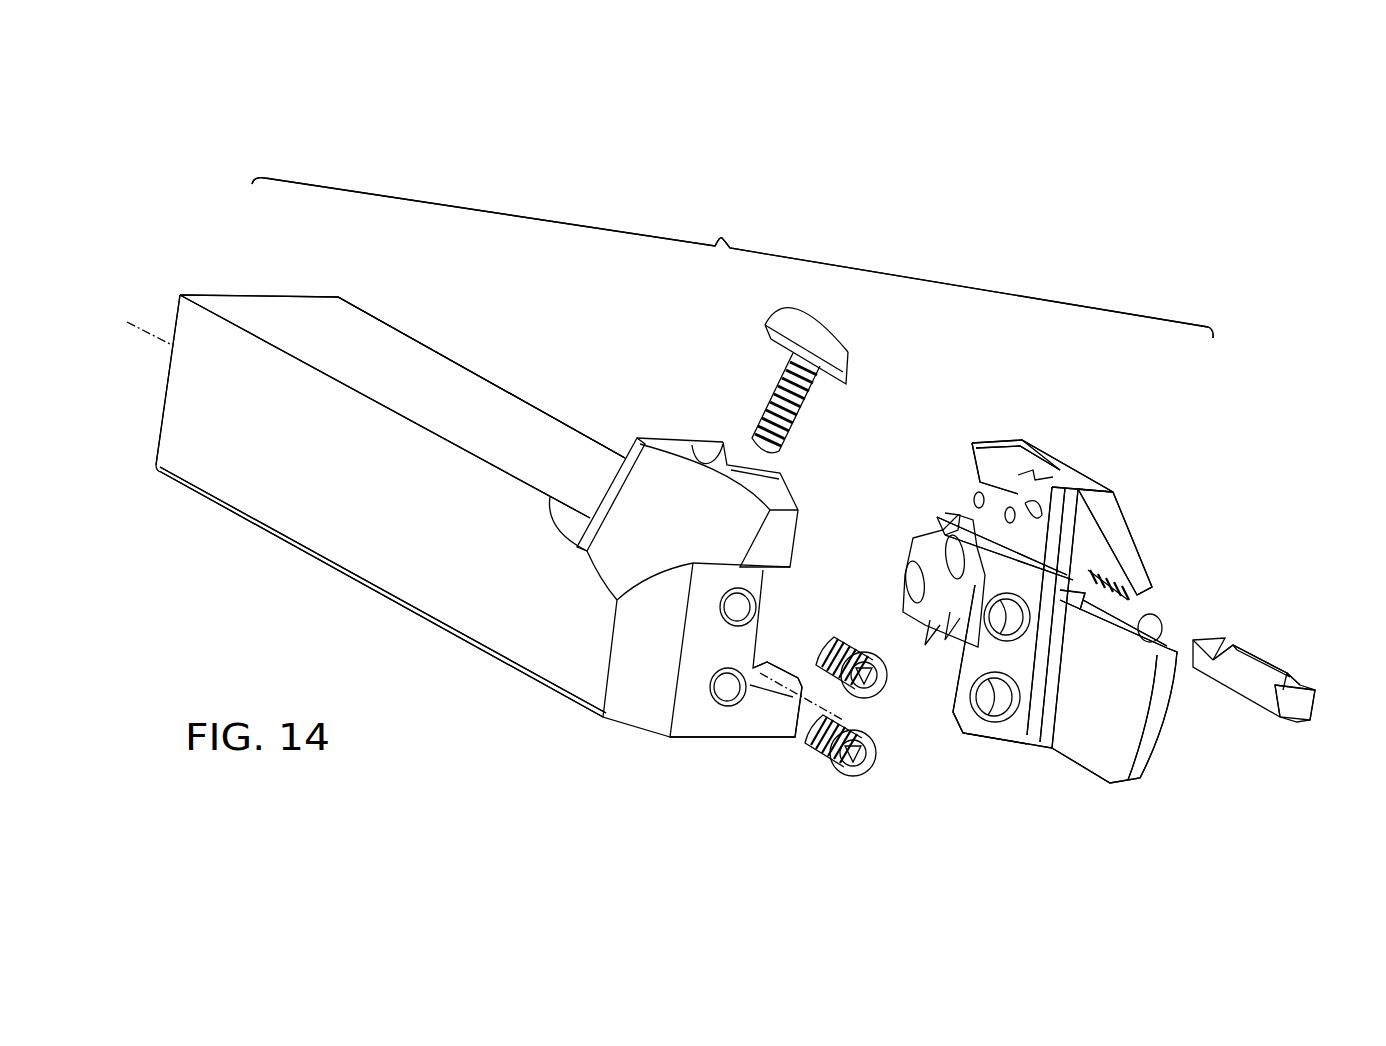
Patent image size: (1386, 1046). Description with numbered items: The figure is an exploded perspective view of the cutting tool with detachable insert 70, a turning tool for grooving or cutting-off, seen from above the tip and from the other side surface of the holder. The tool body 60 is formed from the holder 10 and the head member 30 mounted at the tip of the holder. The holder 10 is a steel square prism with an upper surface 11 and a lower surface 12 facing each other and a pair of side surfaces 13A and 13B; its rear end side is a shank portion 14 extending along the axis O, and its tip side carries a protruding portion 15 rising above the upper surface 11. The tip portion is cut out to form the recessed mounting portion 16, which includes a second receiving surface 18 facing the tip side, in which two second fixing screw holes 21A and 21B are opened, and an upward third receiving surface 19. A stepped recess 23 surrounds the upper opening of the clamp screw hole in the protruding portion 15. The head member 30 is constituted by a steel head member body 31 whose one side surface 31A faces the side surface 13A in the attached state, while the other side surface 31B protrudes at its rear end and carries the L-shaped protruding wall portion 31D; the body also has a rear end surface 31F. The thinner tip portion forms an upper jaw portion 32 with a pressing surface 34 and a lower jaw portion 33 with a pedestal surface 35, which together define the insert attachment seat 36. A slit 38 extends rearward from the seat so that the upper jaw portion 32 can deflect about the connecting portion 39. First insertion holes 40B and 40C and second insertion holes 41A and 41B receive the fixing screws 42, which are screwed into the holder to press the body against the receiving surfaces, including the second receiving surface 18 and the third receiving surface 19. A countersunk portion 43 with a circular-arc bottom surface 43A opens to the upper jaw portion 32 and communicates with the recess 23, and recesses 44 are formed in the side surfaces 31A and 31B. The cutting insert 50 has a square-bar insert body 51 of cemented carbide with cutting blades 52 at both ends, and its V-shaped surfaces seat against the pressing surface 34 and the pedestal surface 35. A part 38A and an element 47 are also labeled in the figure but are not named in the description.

The cutting tool with detachable insert 70 is at (606, 167).
The tool body 60 is at (732, 258).
The holder 10 is at (275, 268).
The upper surface 11 is at (348, 325).
The lower surface 12 is at (285, 555).
The one side surface 13A is at (433, 348).
The other side surface 13B is at (215, 480).
The shank portion 14 is at (190, 412).
The protruding portion 15 is at (622, 428).
The mounting portion 16 is at (772, 607).
The second receiving surface 18 is at (745, 723).
The third receiving surface 19 is at (767, 670).
The second fixing screw hole 21A is at (735, 608).
The second fixing screw hole 21B is at (725, 690).
The stepped recess 23 is at (731, 450).
The axis O is at (138, 325).
The head member 30 is at (1130, 455).
The head member body 31 is at (1032, 738).
The one side surface 31A is at (1080, 465).
The other side surface 31B is at (948, 527).
The protruding wall portion 31D is at (1000, 735).
The rear end surface 31F is at (948, 500).
The upper jaw portion 32 is at (1118, 530).
The lower jaw portion 33 is at (1085, 748).
The pressing surface 34 is at (1150, 600).
The pedestal surface 35 is at (1172, 616).
The insert attachment seat 36 is at (1120, 592).
The slit 38 is at (1018, 548).
The clamp projection 38A is at (1012, 467).
The connecting portion 39 is at (958, 510).
The first insertion hole 40B is at (940, 525).
The first insertion hole 40C is at (915, 580).
The second insertion hole 41A is at (1020, 625).
The second insertion hole 41B is at (1005, 698).
The fixing screw 42 is at (878, 692).
The countersunk portion 43 is at (1002, 463).
The bottom surface 43A is at (980, 463).
The recess 44 is at (955, 615).
The clamp screw 47 is at (855, 345).
The cutting insert 50 is at (1300, 650).
The insert body 51 is at (1305, 705).
The cutting blade 52 is at (1215, 645).